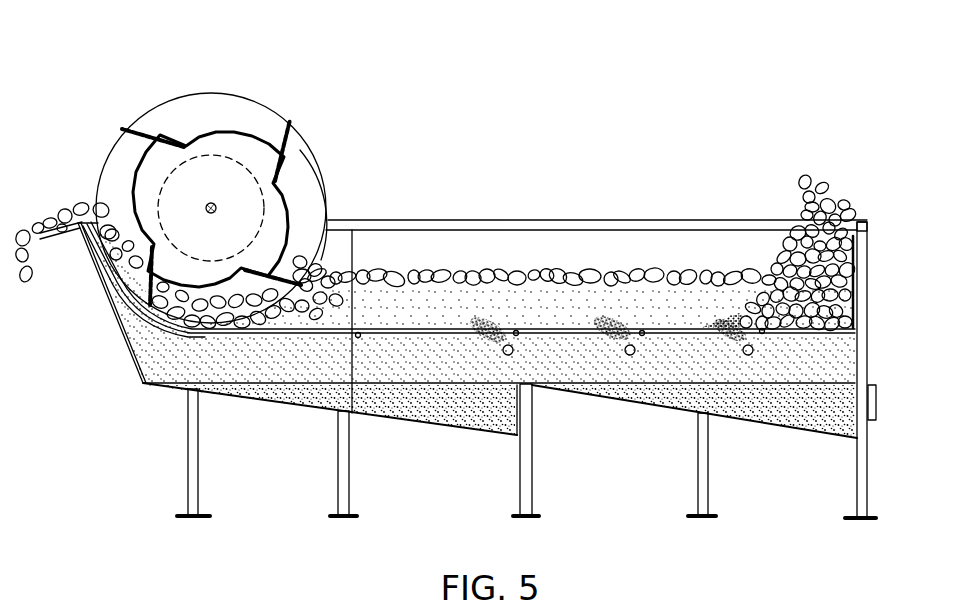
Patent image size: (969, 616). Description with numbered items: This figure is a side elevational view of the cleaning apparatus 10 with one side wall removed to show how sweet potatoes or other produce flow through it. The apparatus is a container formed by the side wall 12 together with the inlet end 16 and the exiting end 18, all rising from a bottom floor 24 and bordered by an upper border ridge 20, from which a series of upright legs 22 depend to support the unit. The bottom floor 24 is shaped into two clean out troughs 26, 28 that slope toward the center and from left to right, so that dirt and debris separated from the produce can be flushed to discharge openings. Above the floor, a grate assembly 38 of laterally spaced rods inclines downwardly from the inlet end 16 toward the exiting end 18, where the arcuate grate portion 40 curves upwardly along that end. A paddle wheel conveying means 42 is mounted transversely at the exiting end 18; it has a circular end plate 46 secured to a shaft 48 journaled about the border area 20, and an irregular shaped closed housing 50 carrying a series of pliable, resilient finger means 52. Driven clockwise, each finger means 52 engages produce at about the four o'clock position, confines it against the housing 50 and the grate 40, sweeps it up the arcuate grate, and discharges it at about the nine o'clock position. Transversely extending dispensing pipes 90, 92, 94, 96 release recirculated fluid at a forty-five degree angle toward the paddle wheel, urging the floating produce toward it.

The cleaning apparatus 10 is at (497, 188).
The side wall 12 is at (576, 246).
The inlet end 16 is at (839, 220).
The exiting end 18 is at (136, 365).
The upper border ridge 20 is at (386, 220).
The legs 22 is at (188, 463).
The bottom floor 24 is at (474, 455).
The clean out trough 26 is at (446, 418).
The clean out trough 28 is at (767, 401).
The grate assembly 38 is at (622, 322).
The arcuate grate portion 40 is at (163, 327).
The paddle wheel conveying means 42 is at (258, 84).
The circular end plate 46 is at (309, 187).
The shaft 48 is at (213, 203).
The closed housing 50 is at (190, 136).
The finger means 52 is at (120, 118).
The dispensing pipe 90 is at (502, 351).
The dispensing pipe 92 is at (625, 351).
The dispensing pipe 94 is at (743, 351).
The dispensing pipe 96 is at (855, 291).